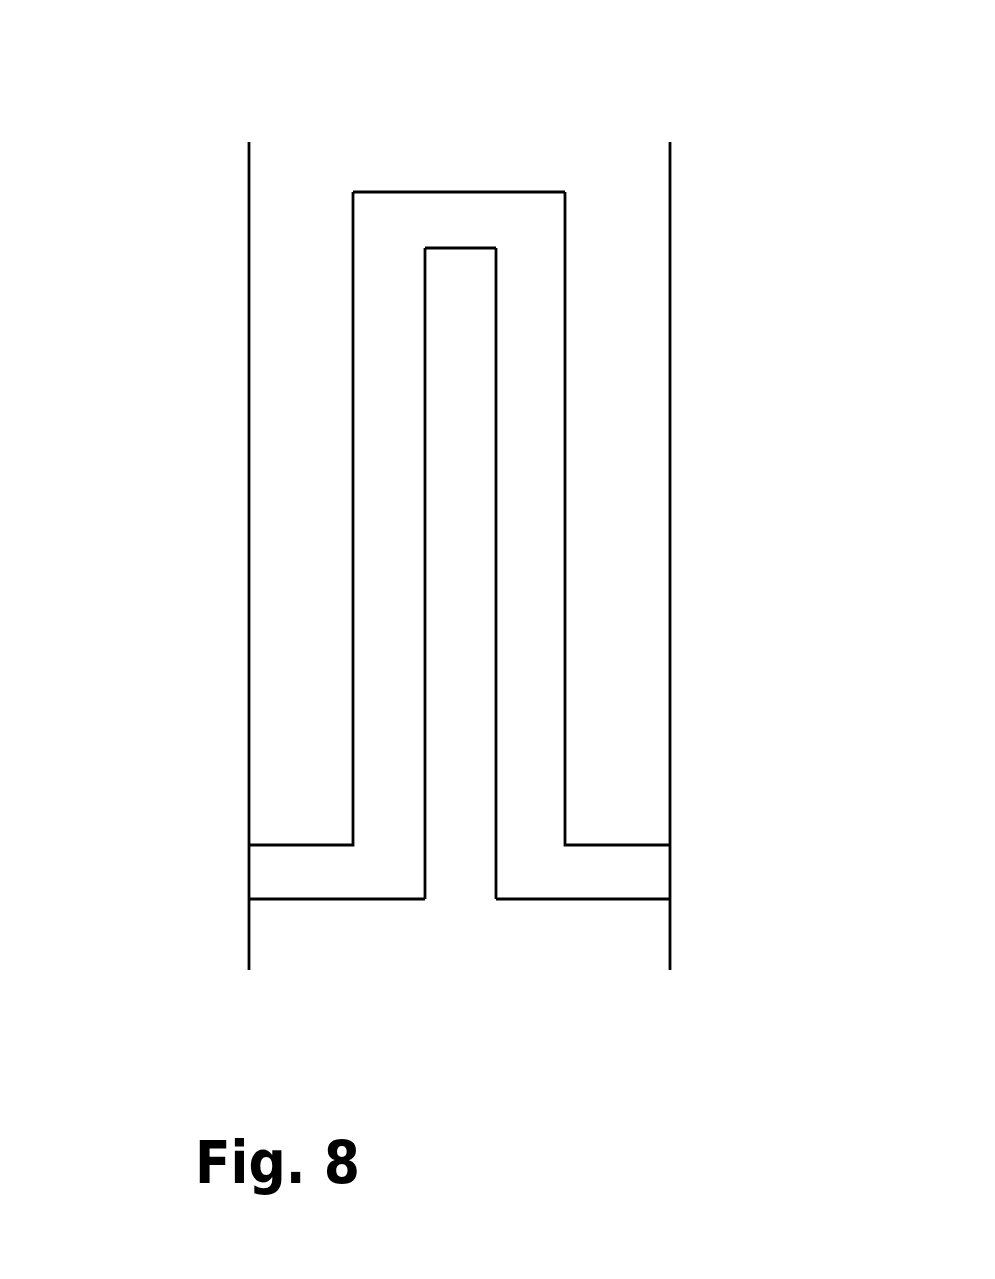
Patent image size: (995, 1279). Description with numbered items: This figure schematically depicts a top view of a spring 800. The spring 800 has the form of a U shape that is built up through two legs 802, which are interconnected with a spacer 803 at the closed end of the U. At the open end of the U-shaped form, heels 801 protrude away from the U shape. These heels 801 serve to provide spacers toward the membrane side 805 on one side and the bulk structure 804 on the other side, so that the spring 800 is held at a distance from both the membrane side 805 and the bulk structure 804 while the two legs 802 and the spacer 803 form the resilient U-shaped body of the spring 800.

The spring 800 is at (464, 150).
The heels 801 is at (367, 900).
The legs 802 is at (426, 540).
The spacer 803 is at (533, 192).
The bulk structure 804 is at (672, 602).
The membrane side 805 is at (248, 552).